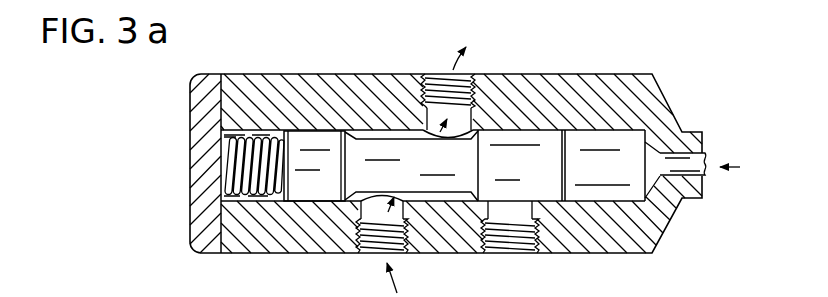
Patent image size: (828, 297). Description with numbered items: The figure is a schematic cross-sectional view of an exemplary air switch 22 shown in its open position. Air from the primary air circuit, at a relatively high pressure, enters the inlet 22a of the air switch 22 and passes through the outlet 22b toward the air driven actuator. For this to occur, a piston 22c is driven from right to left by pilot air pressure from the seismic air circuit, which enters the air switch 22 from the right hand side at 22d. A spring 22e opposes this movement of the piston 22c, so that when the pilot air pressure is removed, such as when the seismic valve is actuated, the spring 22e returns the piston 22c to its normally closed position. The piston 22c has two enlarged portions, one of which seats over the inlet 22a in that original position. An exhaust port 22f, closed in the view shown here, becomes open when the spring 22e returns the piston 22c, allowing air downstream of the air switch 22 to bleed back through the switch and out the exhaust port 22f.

The air switch 22 is at (510, 66).
The inlet 22a is at (373, 254).
The outlet 22b is at (428, 75).
The piston 22c is at (550, 145).
The pilot air entry (right hand side) 22d is at (703, 152).
The spring 22e is at (227, 168).
The exhaust port 22f is at (518, 255).